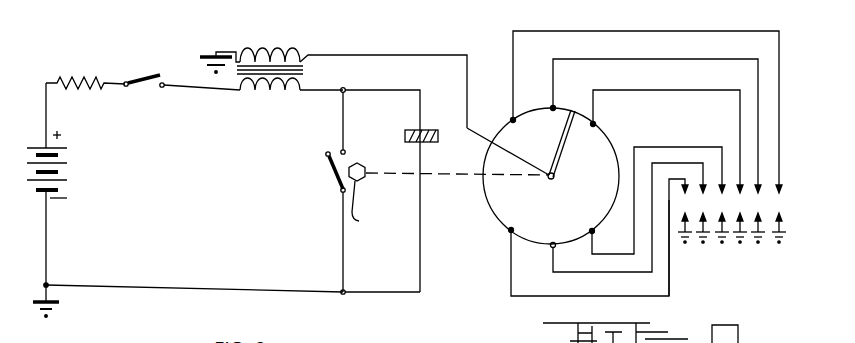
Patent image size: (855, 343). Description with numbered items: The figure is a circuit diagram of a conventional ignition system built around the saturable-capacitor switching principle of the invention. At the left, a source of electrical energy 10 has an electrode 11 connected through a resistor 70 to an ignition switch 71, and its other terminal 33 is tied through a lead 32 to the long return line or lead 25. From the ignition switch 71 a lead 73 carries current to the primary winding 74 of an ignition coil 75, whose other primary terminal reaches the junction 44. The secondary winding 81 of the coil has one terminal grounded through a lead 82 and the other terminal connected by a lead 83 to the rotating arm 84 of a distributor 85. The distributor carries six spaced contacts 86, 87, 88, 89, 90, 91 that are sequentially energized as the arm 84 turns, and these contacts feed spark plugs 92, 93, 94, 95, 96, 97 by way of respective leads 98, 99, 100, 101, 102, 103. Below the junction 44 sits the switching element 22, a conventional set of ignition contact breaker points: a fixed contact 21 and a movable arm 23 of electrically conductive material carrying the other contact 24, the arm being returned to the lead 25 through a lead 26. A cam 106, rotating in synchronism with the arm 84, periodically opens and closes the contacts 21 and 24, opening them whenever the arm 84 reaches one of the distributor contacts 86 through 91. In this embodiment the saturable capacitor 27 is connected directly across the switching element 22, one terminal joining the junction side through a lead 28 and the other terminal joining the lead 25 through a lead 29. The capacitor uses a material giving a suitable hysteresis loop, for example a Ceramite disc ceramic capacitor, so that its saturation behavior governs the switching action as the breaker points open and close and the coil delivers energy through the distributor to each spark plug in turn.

The source of electrical energy 10 is at (64, 175).
The electrode 11 is at (43, 146).
The other terminal 33 is at (44, 193).
The lead 32 is at (47, 257).
The lead 25 is at (170, 286).
The resistor 70 is at (79, 80).
The ignition switch 71 is at (141, 81).
The lead 73 is at (206, 88).
The lead 82 is at (224, 51).
The ignition coil 75 is at (273, 44).
The secondary winding 81 is at (292, 57).
The primary winding 74 is at (276, 96).
The lead 83 is at (372, 55).
The junction 44 is at (348, 85).
The lead 28 is at (396, 89).
The saturable capacitor 27 is at (432, 132).
The contact 21 is at (346, 150).
The contact 24 is at (325, 154).
The movable arm 23 is at (332, 170).
The switching element 22 is at (368, 182).
The cam 106 is at (372, 209).
The lead 26 is at (346, 268).
The lead 29 is at (421, 265).
The distributor 85 is at (500, 233).
The rotating arm 84 is at (562, 150).
The distributor contact 86 is at (514, 119).
The distributor contact 87 is at (556, 107).
The distributor contact 88 is at (594, 124).
The distributor contact 89 is at (594, 232).
The distributor contact 90 is at (555, 247).
The distributor contact 91 is at (514, 232).
The lead 98 is at (720, 32).
The lead 99 is at (713, 60).
The lead 100 is at (689, 91).
The lead 101 is at (660, 147).
The lead 102 is at (641, 276).
The lead 103 is at (672, 283).
The spark plug 92 is at (782, 204).
The spark plug 93 is at (767, 206).
The spark plug 94 is at (750, 205).
The spark plug 95 is at (735, 205).
The spark plug 96 is at (697, 204).
The spark plug 97 is at (683, 205).